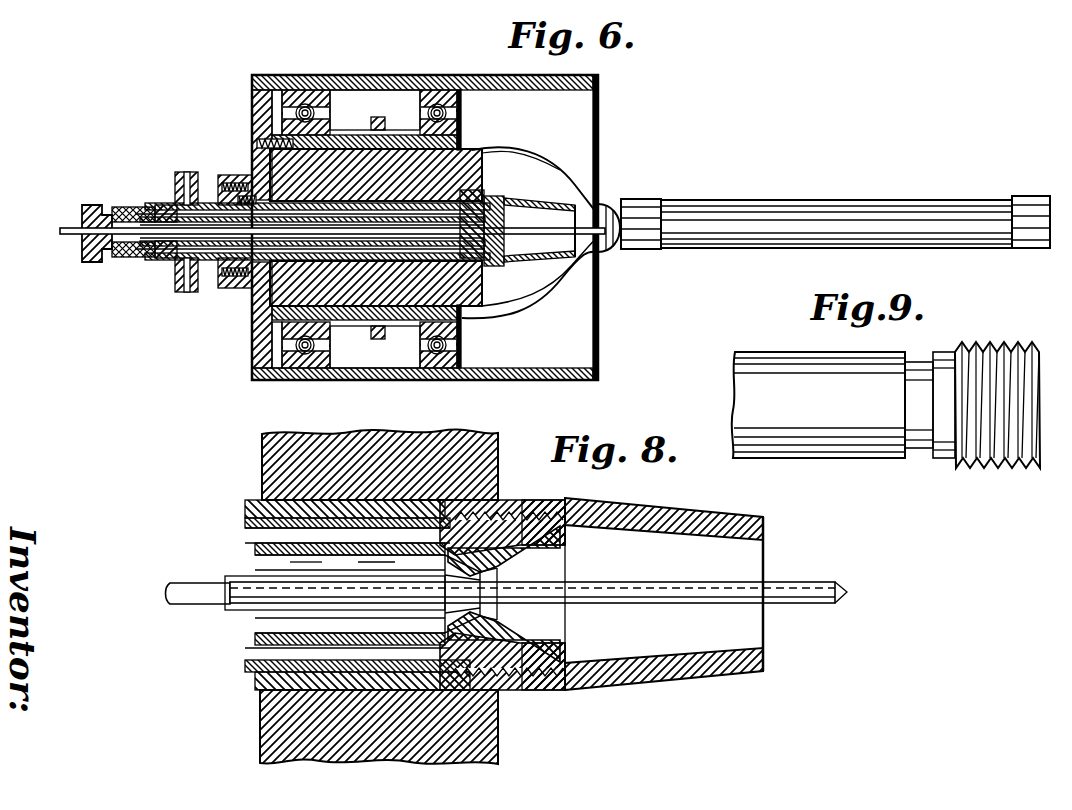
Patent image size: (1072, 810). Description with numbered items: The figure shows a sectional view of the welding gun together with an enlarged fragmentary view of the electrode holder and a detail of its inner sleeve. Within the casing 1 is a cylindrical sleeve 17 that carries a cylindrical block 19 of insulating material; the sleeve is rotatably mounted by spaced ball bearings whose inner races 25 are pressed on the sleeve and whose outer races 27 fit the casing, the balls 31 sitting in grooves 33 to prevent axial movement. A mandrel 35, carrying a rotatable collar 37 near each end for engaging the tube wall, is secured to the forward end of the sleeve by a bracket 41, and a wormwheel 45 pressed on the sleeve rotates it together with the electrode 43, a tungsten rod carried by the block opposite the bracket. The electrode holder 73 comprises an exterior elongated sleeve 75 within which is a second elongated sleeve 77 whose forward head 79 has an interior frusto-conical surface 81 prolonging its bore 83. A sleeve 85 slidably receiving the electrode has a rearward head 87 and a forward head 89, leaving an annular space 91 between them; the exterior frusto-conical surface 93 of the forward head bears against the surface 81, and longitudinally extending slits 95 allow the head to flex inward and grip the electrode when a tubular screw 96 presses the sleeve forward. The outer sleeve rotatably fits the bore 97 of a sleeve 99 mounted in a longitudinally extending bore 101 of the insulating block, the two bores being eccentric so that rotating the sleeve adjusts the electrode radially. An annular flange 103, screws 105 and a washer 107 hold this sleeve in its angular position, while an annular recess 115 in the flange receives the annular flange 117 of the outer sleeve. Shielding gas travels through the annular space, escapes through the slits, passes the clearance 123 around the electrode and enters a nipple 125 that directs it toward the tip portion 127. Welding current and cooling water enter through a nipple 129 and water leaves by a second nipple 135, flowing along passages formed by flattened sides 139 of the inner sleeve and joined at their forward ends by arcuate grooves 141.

In FIG. 6, the casing 1 is at (396, 77).
In FIG. 6, the cylindrical sleeve 17 is at (462, 319).
In FIG. 6, the cylindrical block of insulating material 19 is at (482, 292).
In FIG. 8, the cylindrical block of insulating material 19 is at (448, 440).
In FIG. 6, the inner races 25 is at (462, 140).
In FIG. 6, the outer races 27 is at (452, 88).
In FIG. 6, the balls 31 is at (457, 118).
In FIG. 6, the grooves 33 is at (418, 103).
In FIG. 6, the mandrel 35 is at (773, 199).
In FIG. 6, the collar 37 is at (645, 199).
In FIG. 6, the bracket 41 is at (530, 146).
In FIG. 6, the electrode 43 is at (520, 240).
In FIG. 8, the electrode 43 is at (191, 576).
In FIG. 6, the wormwheel 45 is at (380, 332).
In FIG. 6, the electrode holder 73 is at (127, 204).
In FIG. 6, the exterior elongated sleeve 75 is at (110, 258).
In FIG. 8, the exterior elongated sleeve 75 is at (250, 527).
In FIG. 6, the second elongated sleeve 77 is at (166, 204).
In FIG. 8, the second elongated sleeve 77 is at (255, 548).
In FIG. 9, the second elongated sleeve 77 is at (770, 358).
In FIG. 6, the head 79 is at (520, 203).
In FIG. 8, the head 79 is at (552, 502).
In FIG. 9, the head 79 is at (1000, 350).
In FIG. 6, the interior frusto-conical surface 81 is at (488, 200).
In FIG. 8, the interior frusto-conical surface 81 is at (510, 522).
In FIG. 6, the bore 83 is at (350, 322).
In FIG. 8, the bore 83 is at (255, 638).
In FIG. 6, the sleeve 85 is at (162, 259).
In FIG. 8, the sleeve 85 is at (228, 606).
In FIG. 6, the head 87 is at (138, 258).
In FIG. 8, the head 89 is at (478, 528).
In FIG. 8, the annular space 91 is at (350, 562).
In FIG. 8, the exterior frusto-conical surface 93 is at (500, 555).
In FIG. 8, the longitudinally extending slits 95 is at (400, 614).
In FIG. 6, the tubular screw 96 is at (82, 207).
In FIG. 8, the bore 97 is at (262, 520).
In FIG. 6, the sleeve 99 is at (332, 190).
In FIG. 8, the sleeve 99 is at (272, 510).
In FIG. 6, the longitudinally extending bore 101 is at (490, 150).
In FIG. 8, the longitudinally extending bore 101 is at (355, 510).
In FIG. 6, the outwardly extending annular flange 103 is at (232, 290).
In FIG. 6, the screws 105 is at (208, 266).
In FIG. 6, the washer 107 is at (222, 262).
In FIG. 6, the annular recess 115 is at (250, 188).
In FIG. 6, the outwardly extending annular flange 117 is at (210, 202).
In FIG. 8, the clearance 123 is at (497, 607).
In FIG. 6, the nipple 125 is at (562, 200).
In FIG. 8, the nipple 125 is at (672, 522).
In FIG. 6, the tip portion 127 is at (603, 244).
In FIG. 8, the tip portion 127 is at (838, 588).
In FIG. 6, the nipple 129 is at (182, 183).
In FIG. 6, the second nipple 135 is at (175, 261).
In FIG. 8, the flattened sides 139 is at (333, 675).
In FIG. 9, the flattened sides 139 is at (813, 395).
In FIG. 9, the arcuate grooves 141 is at (918, 360).